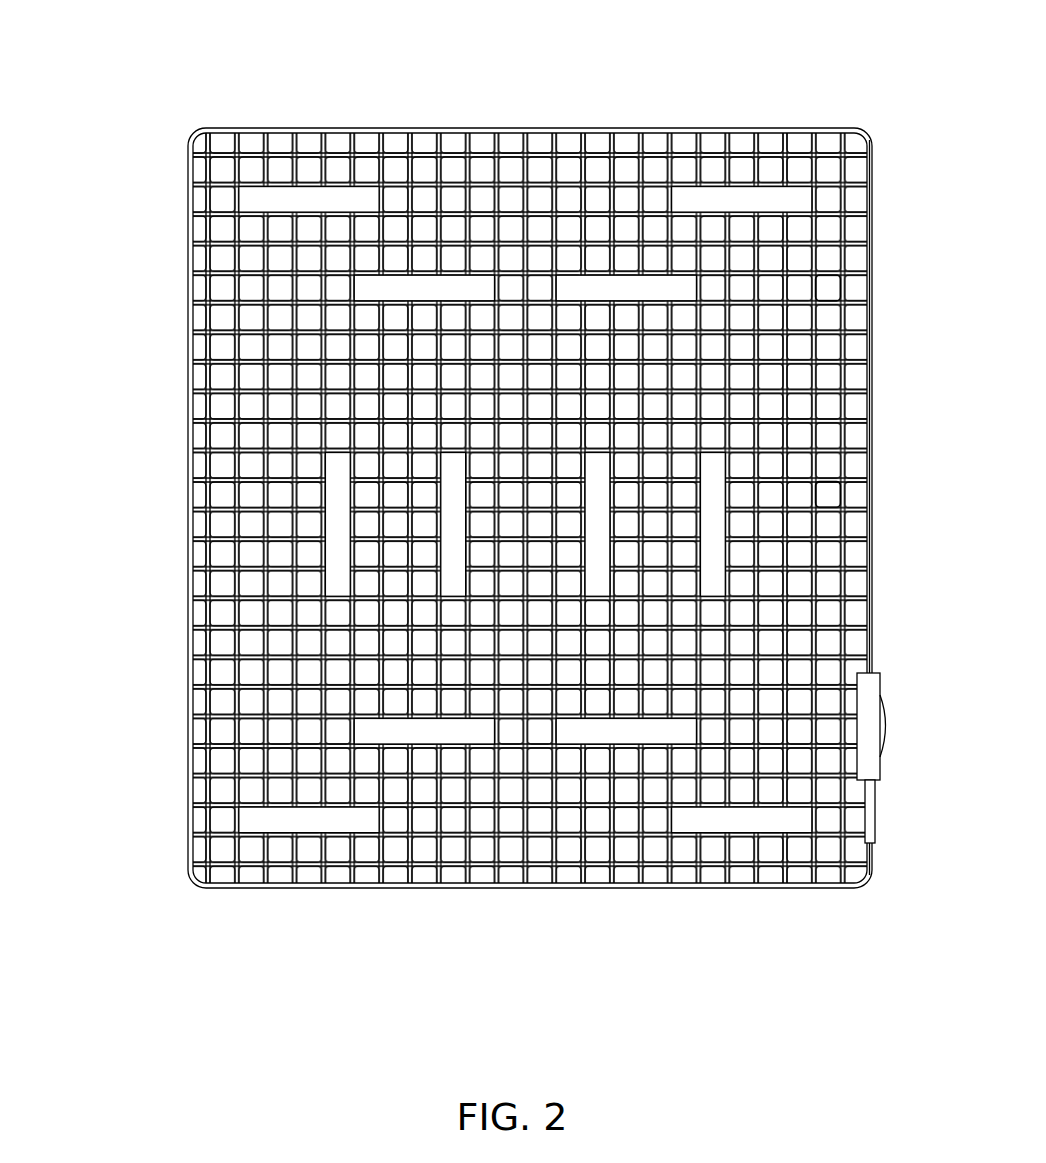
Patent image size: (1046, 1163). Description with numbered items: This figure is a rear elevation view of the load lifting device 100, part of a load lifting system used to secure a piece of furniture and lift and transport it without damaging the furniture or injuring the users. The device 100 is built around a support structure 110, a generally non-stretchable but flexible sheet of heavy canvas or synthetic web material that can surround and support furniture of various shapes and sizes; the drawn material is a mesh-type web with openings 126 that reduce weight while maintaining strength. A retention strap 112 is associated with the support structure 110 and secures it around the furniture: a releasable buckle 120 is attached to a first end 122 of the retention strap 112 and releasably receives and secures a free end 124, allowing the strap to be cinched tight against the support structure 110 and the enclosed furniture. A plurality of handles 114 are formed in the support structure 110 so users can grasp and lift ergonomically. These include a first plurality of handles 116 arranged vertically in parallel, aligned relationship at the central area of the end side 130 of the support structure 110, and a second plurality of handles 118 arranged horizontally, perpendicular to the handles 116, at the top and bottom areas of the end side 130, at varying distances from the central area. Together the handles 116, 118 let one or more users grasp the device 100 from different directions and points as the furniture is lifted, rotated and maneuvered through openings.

The load lifting device 100 is at (505, 481).
The support structure 110 is at (600, 204).
The retention strap 112 is at (296, 128).
The plurality of handles 114 is at (146, 335).
The first plurality of handles 116 is at (343, 530).
The second plurality of handles 118 is at (424, 293).
The releasable buckle 120 is at (871, 687).
The first end 122 is at (870, 631).
The free end 124 is at (870, 812).
The openings 126 is at (830, 518).
The end side 130 is at (830, 295).